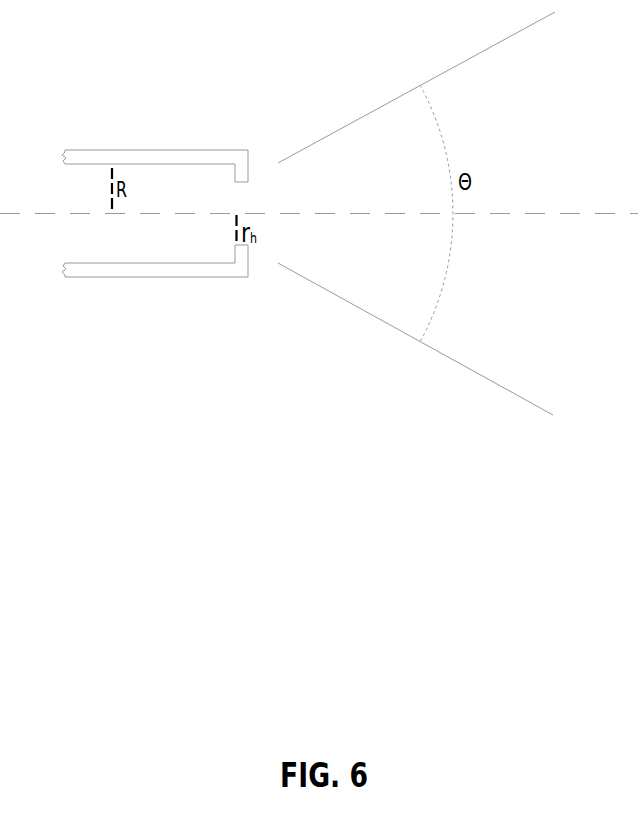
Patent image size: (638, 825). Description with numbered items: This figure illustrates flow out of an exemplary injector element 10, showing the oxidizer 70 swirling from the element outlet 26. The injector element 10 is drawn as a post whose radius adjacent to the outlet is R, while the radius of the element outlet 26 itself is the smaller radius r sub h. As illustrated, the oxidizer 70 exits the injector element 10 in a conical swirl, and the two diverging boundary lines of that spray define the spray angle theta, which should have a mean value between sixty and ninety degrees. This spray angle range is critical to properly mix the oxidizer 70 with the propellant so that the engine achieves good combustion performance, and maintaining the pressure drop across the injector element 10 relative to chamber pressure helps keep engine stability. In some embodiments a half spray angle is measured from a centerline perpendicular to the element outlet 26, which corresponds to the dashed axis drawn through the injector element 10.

The injector element 10 is at (207, 105).
The element outlet 26 is at (247, 202).
The oxidizer 70 is at (460, 62).